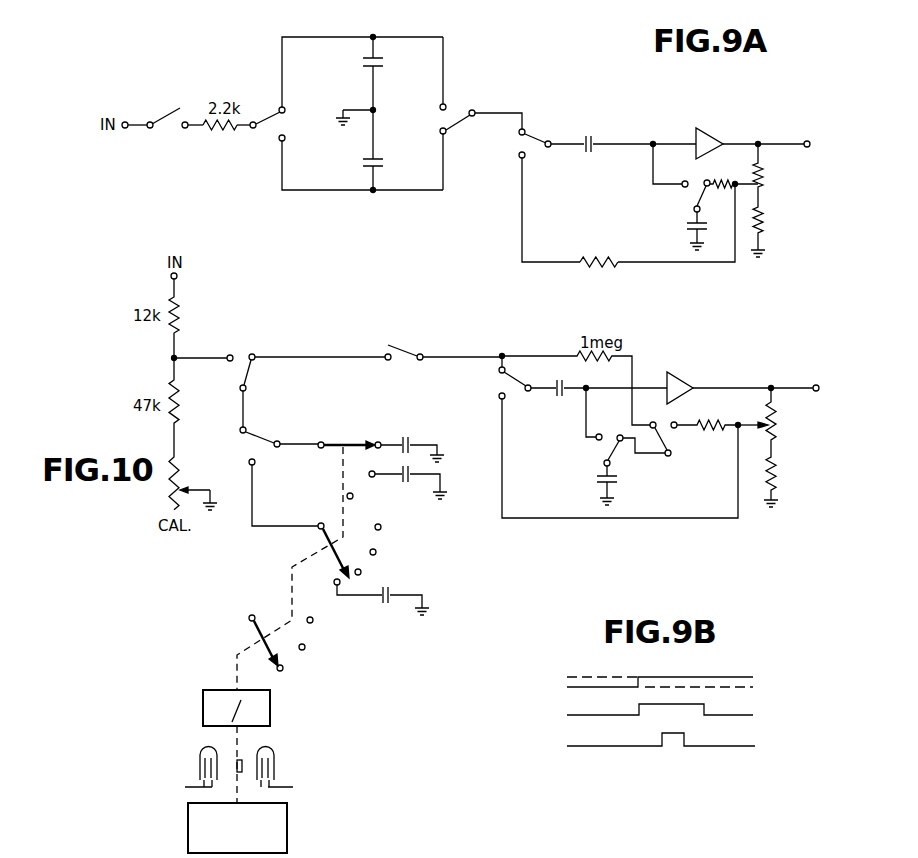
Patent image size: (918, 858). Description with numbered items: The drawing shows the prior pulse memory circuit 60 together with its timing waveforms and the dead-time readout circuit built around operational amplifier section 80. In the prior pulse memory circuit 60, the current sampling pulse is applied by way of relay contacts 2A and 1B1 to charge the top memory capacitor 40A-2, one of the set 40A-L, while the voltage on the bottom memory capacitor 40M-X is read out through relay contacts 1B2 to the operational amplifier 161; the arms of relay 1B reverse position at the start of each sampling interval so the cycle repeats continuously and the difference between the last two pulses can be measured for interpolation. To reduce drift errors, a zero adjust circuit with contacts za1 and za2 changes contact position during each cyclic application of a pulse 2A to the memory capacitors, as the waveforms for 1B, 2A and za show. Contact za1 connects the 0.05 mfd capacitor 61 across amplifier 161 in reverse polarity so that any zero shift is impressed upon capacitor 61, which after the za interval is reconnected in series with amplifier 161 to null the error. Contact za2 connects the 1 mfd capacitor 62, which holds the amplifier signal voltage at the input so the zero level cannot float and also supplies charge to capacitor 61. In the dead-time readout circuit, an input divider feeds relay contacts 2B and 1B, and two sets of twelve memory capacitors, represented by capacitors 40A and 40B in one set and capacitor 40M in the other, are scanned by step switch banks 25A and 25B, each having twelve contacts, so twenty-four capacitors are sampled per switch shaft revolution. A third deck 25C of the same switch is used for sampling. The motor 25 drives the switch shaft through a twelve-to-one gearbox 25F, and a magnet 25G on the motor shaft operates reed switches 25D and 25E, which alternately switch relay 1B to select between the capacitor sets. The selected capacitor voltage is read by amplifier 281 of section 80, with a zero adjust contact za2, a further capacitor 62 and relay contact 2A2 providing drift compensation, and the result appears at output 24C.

In FIG. 9A, the relay contacts 2A is at (167, 128).
In FIG. 9B, the relay contacts 2A is at (672, 714).
In FIG. 10, the relay contacts 2A is at (417, 358).
In FIG. 9A, the relay contacts 1B1 is at (267, 128).
In FIG. 9A, the relay contacts 1B2 is at (463, 113).
In FIG. 9A, the memory capacitor 40A-2 is at (397, 73).
In FIG. 9A, the memory capacitor 40M-X is at (398, 150).
In FIG. 9A, the prior pulse memory circuit 60 is at (573, 105).
In FIG. 9A, the zero adjust relay contact za1 is at (520, 142).
In FIG. 9A, the 0.05 mfd capacitor 61 is at (592, 139).
In FIG. 9A, the operational amplifier 161 is at (708, 139).
In FIG. 9A, the zero adjust relay contact za2 is at (699, 199).
In FIG. 10, the zero adjust relay contact za2 is at (605, 452).
In FIG. 9A, the 1 mfd capacitor 62 is at (701, 223).
In FIG. 10, the 1 mfd capacitor 62 is at (600, 485).
In FIG. 9B, the relay 1B is at (672, 683).
In FIG. 10, the relay 1B is at (252, 446).
In FIG. 9B, the zero adjust za is at (672, 743).
In FIG. 10, the relay contacts 2B is at (247, 364).
In FIG. 10, the switch bank 25A is at (330, 443).
In FIG. 10, the memory capacitor 40A is at (407, 440).
In FIG. 10, the memory capacitor 40B is at (408, 484).
In FIG. 10, the switch bank 25B is at (343, 538).
In FIG. 10, the memory capacitor 40M is at (390, 594).
In FIG. 10, the third deck 25C is at (257, 634).
In FIG. 10, the 12-to-one gearbox 25F is at (203, 712).
In FIG. 10, the magnet 25G is at (243, 761).
In FIG. 10, the reed switch 25E is at (200, 762).
In FIG. 10, the reed switch 25D is at (275, 766).
In FIG. 10, the motor 25 is at (288, 836).
In FIG. 10, the operational amplifier section 80 is at (668, 350).
In FIG. 10, the amplifier 281 is at (671, 373).
In FIG. 10, the relay contact 2A2 is at (670, 437).
In FIG. 10, the output terminal 24C is at (814, 386).